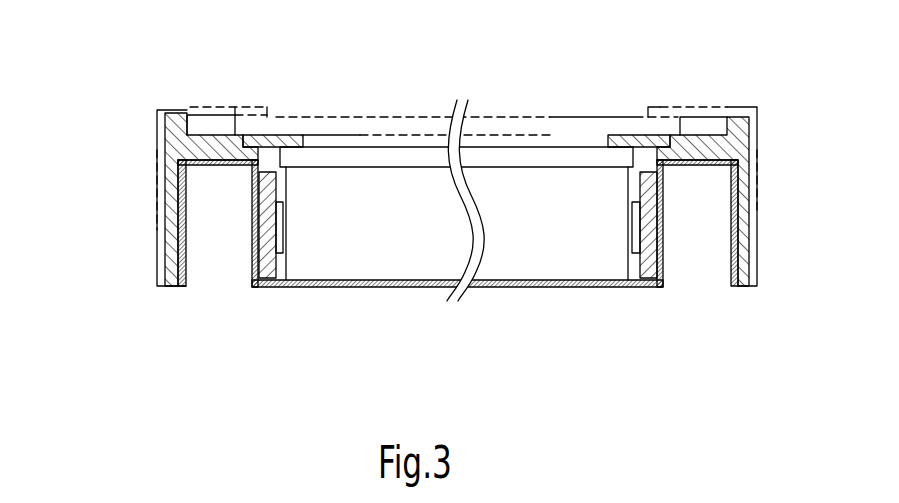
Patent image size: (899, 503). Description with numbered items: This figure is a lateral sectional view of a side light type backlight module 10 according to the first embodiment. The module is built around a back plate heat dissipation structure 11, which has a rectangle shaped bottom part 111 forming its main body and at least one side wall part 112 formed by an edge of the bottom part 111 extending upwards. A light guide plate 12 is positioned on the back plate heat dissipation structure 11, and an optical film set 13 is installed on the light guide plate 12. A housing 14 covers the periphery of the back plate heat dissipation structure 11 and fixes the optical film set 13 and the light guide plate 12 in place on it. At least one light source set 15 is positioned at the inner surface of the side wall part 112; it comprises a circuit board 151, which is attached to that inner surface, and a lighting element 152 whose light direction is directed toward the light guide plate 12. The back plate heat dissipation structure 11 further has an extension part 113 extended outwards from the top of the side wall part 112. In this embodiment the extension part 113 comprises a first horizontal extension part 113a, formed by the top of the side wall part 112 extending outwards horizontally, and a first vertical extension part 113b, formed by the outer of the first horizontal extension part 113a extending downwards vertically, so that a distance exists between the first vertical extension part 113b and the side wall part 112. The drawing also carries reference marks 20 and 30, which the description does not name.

The side light type backlight module 10 is at (738, 104).
The back plate heat dissipation structure 11 is at (385, 269).
The bottom part 111 is at (373, 283).
The side wall part 112 is at (257, 233).
The extension part 113 is at (157, 109).
The first horizontal extension part 113a is at (207, 135).
The first vertical extension part 113b is at (165, 222).
The light guide plate 12 is at (543, 257).
The optical film set 13 is at (550, 158).
The housing 14 is at (157, 142).
The light source set 15 is at (285, 187).
The circuit board 151 is at (263, 137).
The lighting element 152 is at (285, 230).
The display module 20 is at (500, 124).
The frame member 30 is at (180, 110).